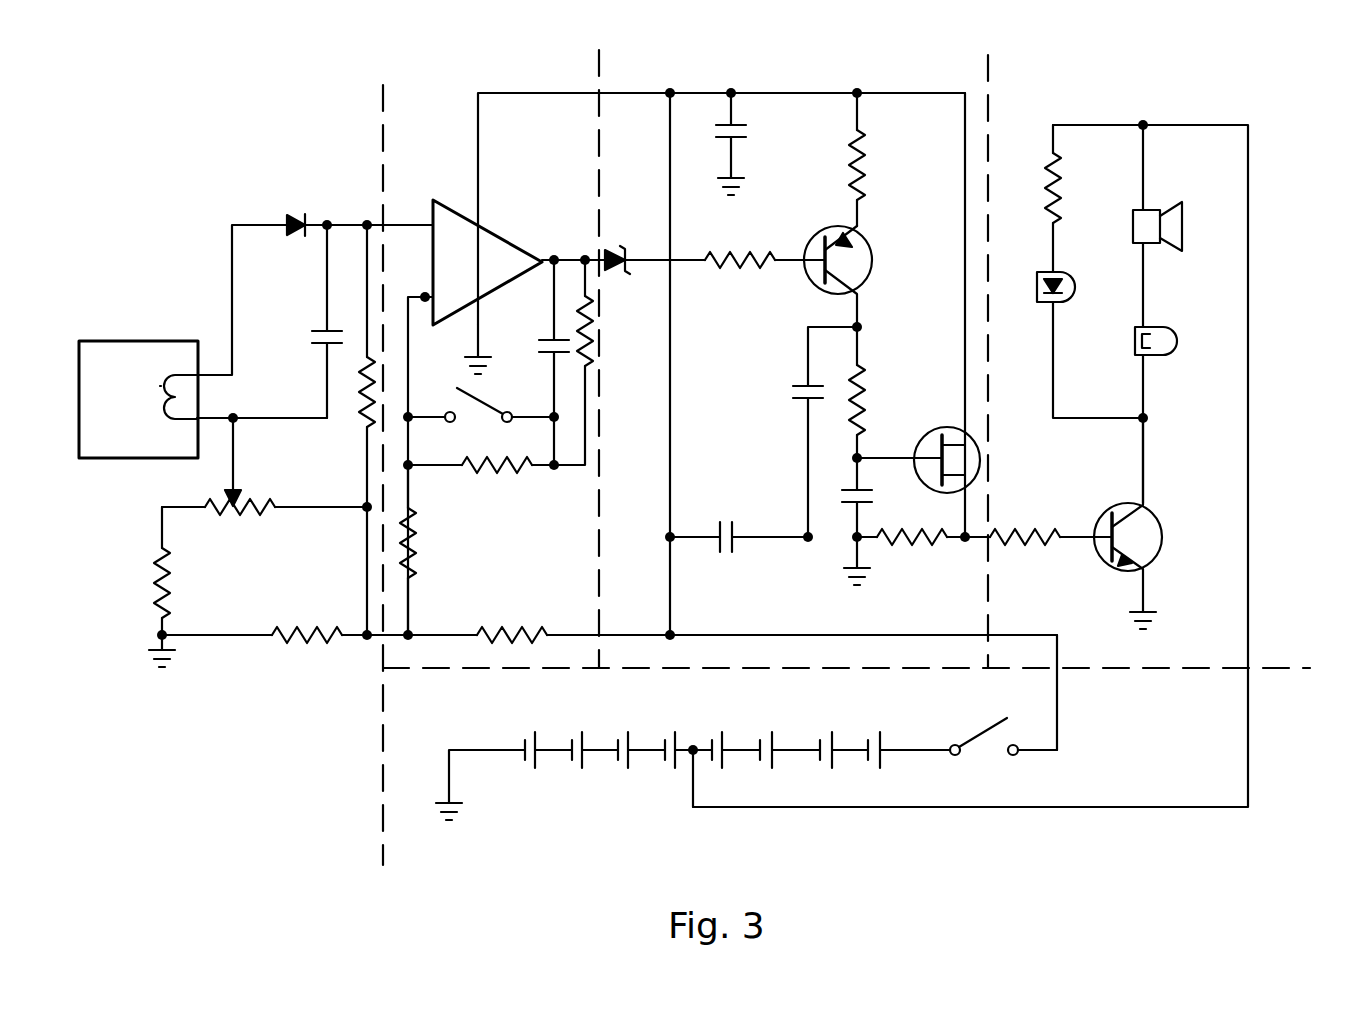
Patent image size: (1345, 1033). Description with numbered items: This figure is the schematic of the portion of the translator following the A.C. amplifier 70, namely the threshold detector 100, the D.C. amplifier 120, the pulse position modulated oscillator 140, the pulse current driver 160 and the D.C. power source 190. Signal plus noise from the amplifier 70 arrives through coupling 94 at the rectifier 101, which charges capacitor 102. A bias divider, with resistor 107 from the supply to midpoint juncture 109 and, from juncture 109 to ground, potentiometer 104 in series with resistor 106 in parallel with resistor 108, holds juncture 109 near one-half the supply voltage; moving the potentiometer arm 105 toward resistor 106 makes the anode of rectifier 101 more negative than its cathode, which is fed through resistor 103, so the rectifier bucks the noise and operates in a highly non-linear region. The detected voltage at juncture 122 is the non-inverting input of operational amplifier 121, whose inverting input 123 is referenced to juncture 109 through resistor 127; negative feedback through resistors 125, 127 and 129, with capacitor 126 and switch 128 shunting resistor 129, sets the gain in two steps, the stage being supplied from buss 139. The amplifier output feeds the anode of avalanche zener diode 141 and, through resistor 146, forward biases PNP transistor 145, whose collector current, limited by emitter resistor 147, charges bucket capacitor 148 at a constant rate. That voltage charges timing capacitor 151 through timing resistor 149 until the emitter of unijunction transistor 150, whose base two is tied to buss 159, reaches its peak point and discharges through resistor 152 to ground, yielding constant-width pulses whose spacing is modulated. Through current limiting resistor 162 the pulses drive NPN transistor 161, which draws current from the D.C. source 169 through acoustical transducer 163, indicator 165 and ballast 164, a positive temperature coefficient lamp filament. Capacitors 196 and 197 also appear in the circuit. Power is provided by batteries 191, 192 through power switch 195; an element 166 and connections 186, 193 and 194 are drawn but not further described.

The threshold detector 100 is at (255, 101).
The A.C. amplifier 70 is at (114, 358).
The coupling 94 is at (188, 393).
The rectifier 101 is at (283, 211).
The capacitor 102 is at (297, 340).
The resistor 103 is at (353, 427).
The potentiometer 104 is at (222, 523).
The potentiometer arm 105 is at (239, 471).
The resistor 106 is at (181, 586).
The resistor 107 is at (500, 619).
The resistor 108 is at (301, 658).
The midpoint juncture 109 is at (358, 540).
The D.C. amplifier 120 is at (420, 100).
The operational amplifier 121 is at (480, 250).
The non-inverting input 122 is at (399, 216).
The inverting input 123 is at (415, 306).
The resistor 125 is at (595, 332).
The capacitor 126 is at (546, 341).
The resistor 127 is at (425, 548).
The switch 128 is at (488, 401).
The resistor 129 is at (506, 488).
The D.C. voltage buss 139 is at (551, 98).
The pulse position modulated oscillator 140 is at (786, 70).
The avalanche zener diode 141 is at (617, 244).
The PNP transistor 145 is at (876, 244).
The resistor 146 is at (738, 246).
The emitter resistor 147 is at (873, 166).
The bucket capacitor 148 is at (796, 408).
The timing resistor 149 is at (875, 383).
The unijunction transistor 150 is at (932, 433).
The timing capacitor 151 is at (840, 513).
The resistor 152 is at (913, 561).
The D.C. power buss 159 is at (674, 394).
The pulse current driver 160 is at (1144, 86).
The NPN transistor 161 is at (1160, 516).
The current limiting resistor 162 is at (1014, 521).
The acoustical transducer 163 is at (1161, 206).
The ballast 164 is at (1170, 326).
The visual indicating device 165 is at (1067, 312).
The resistor 166 is at (1068, 188).
The D.C. source 169 is at (1253, 281).
The conductor 186 is at (1060, 690).
The D.C. power source 190 is at (1112, 735).
The battery 191 is at (626, 712).
The battery 192 is at (822, 711).
The conductor 193 is at (684, 805).
The conductor 194 is at (907, 757).
The power switch 195 is at (958, 733).
The capacitor 196 is at (728, 528).
The capacitor 197 is at (752, 136).